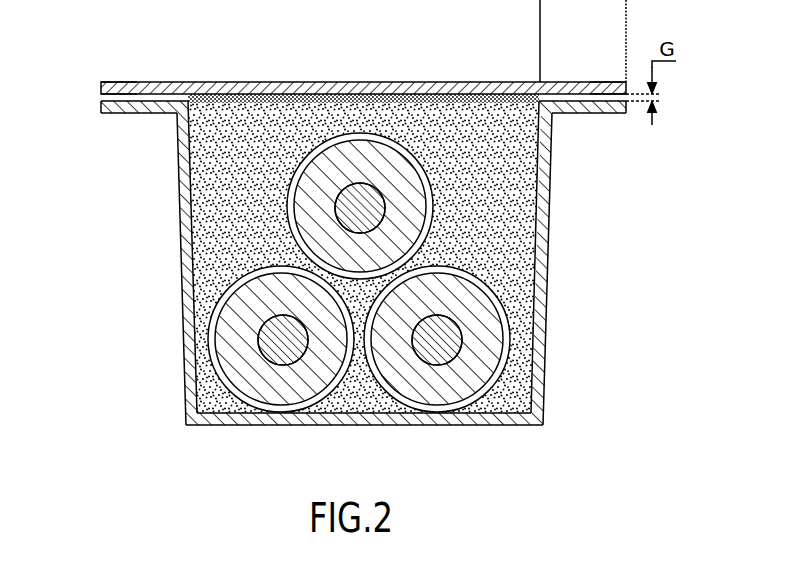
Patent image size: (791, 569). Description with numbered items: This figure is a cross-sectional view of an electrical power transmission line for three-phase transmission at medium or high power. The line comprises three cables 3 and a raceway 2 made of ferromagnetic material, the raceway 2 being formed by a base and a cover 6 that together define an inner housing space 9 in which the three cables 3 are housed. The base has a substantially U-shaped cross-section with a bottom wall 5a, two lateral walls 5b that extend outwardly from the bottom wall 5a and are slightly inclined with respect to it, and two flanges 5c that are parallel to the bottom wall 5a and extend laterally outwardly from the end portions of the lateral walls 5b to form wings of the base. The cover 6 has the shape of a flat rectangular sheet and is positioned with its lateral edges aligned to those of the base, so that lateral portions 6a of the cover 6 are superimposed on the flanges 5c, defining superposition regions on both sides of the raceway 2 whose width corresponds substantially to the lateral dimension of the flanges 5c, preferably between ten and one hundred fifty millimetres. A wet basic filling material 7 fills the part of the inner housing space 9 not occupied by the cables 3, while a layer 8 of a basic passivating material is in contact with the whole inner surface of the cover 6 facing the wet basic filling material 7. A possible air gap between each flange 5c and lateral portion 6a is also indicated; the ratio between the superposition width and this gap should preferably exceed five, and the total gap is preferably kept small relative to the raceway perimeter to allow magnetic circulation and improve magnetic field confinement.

The raceway 2 is at (570, 194).
The cables 3 is at (314, 191).
The bottom wall 5a is at (247, 427).
The lateral walls 5b is at (183, 283).
The flanges 5c is at (140, 113).
The cover 6 is at (290, 90).
The lateral portions of the cover 6a is at (132, 82).
The wet basic filling material 7 is at (508, 276).
The layer of basic passivating material 8 is at (411, 97).
The inner housing space 9 is at (205, 242).